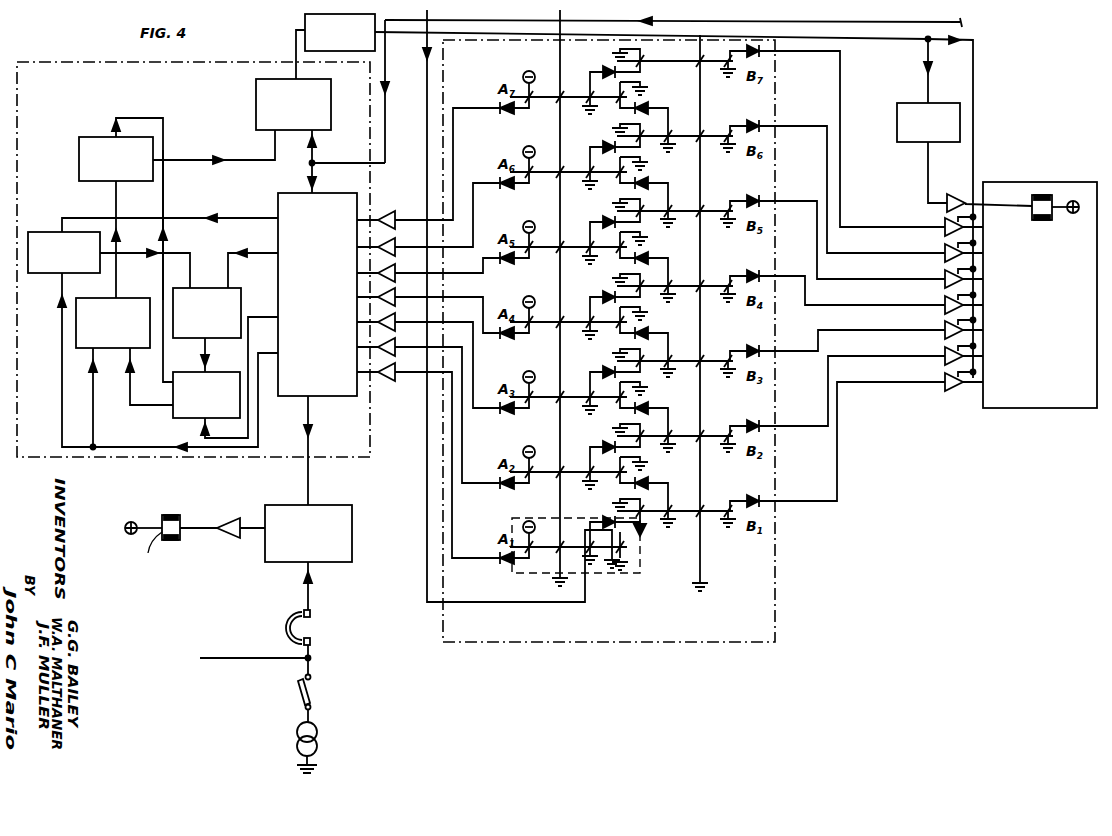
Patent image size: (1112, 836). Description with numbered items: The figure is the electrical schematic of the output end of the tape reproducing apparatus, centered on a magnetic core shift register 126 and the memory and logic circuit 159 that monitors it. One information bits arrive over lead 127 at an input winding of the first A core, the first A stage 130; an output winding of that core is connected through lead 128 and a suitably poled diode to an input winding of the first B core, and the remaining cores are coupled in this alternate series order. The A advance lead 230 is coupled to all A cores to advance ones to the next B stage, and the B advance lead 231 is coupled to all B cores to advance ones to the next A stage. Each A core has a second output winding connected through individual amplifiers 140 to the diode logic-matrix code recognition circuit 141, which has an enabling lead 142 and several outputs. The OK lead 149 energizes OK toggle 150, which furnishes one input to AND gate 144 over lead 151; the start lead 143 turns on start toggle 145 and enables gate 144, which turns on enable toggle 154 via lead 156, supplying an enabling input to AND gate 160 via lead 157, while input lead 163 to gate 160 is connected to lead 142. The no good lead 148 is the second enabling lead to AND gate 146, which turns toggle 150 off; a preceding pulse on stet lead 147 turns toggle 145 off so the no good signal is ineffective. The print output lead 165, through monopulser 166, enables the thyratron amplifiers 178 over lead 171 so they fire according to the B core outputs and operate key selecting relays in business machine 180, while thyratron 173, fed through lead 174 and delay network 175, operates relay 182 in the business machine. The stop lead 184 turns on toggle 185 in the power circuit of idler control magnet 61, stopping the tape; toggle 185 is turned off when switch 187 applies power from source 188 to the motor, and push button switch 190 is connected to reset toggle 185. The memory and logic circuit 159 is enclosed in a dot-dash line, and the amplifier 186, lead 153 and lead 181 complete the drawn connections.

The idler control magnet 61 is at (162, 515).
The magnetic core shift register 126 is at (444, 642).
The lead 127 is at (386, 92).
The lead 128 is at (628, 537).
The A1 stage 130 is at (609, 574).
The amplifiers 140 is at (398, 268).
The code recognition circuit 141 is at (331, 396).
The enabling lead 142 is at (316, 180).
The start lead 143 is at (134, 446).
The AND gate 144 is at (76, 331).
The start toggle 145 is at (60, 275).
The AND gate 146 is at (179, 338).
The stet lead 147 is at (208, 214).
The no good lead 148 is at (229, 270).
The OK lead 149 is at (250, 420).
The OK toggle 150 is at (192, 418).
The lead 151 is at (129, 393).
The line 153 is at (166, 184).
The enable toggle 154 is at (100, 137).
The lead 156 is at (115, 199).
The lead 157 is at (258, 160).
The memory and logic circuit 159 is at (36, 63).
The AND gate 160 is at (258, 95).
The input lead 163 is at (316, 152).
The print output lead 165 is at (296, 53).
The monopulser 166 is at (305, 20).
The enabling lead 171 is at (974, 88).
The thyratron 173 is at (955, 190).
The lead 174 is at (928, 86).
The delay network 175 is at (897, 121).
The thyratron amplifiers 178 is at (945, 222).
The business machine 180 is at (1035, 408).
The line 181 is at (998, 203).
The relay 182 is at (1035, 208).
The stop lead 184 is at (312, 410).
The toggle 185 is at (290, 505).
The amplifier 186 is at (203, 522).
The switch 187 is at (298, 692).
The power source 188 is at (297, 736).
The push button switch 190 is at (287, 632).
The A advance lead 230 is at (560, 50).
The B advance lead 231 is at (700, 32).